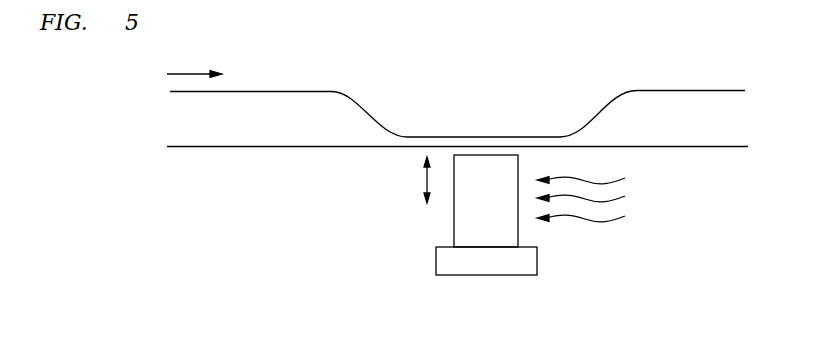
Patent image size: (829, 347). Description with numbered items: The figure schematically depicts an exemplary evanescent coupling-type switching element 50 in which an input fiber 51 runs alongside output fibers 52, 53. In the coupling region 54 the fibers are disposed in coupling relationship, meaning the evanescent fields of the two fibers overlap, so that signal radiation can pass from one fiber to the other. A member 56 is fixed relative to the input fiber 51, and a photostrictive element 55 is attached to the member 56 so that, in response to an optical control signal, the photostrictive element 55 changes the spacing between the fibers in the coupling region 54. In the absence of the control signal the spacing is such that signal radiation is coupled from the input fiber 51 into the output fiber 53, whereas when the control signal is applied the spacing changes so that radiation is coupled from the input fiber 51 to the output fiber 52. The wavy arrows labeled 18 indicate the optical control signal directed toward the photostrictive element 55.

The evanescent coupling-type switching element 50 is at (561, 66).
The input fiber 51 is at (183, 93).
The output fiber 52 is at (703, 91).
The output fiber 53 is at (680, 146).
The coupling region 54 is at (560, 112).
The photostrictive element 55 is at (453, 215).
The member 56 is at (437, 270).
The air flow 18 is at (623, 210).